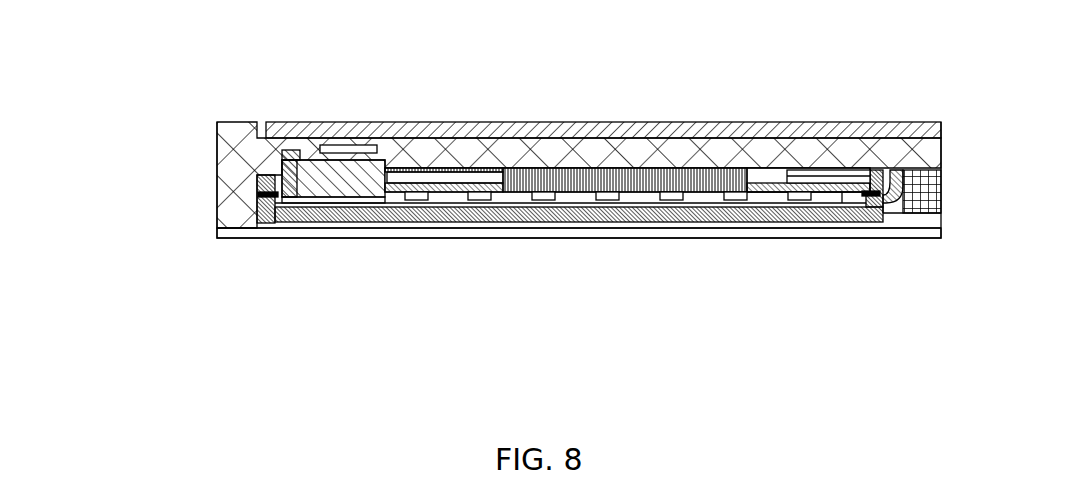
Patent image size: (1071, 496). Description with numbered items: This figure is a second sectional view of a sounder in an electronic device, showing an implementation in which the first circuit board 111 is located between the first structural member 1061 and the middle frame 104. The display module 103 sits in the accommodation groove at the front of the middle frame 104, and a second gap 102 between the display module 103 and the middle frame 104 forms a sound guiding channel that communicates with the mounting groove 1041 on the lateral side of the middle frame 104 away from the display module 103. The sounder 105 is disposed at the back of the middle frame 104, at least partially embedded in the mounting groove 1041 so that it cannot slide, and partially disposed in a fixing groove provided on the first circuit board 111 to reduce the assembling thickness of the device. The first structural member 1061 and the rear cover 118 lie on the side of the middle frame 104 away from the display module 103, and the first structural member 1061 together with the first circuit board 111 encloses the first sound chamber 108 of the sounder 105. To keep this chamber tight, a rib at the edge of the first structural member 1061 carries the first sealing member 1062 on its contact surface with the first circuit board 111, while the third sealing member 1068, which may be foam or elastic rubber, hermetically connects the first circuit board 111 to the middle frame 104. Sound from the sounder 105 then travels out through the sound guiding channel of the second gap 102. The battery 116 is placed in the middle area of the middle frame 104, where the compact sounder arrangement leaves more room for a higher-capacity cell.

The second gap 102 is at (262, 122).
The display module 103 is at (510, 137).
The middle frame 104 is at (644, 172).
The sounder 105 is at (318, 200).
The first sound chamber 108 is at (387, 202).
The first circuit board 111 is at (747, 177).
The battery 116 is at (917, 212).
The rear cover 118 is at (687, 235).
The mounting groove 1041 is at (300, 152).
The first structural member 1061 is at (543, 217).
The first sealing member 1062 is at (258, 197).
The third sealing member 1068 is at (266, 192).